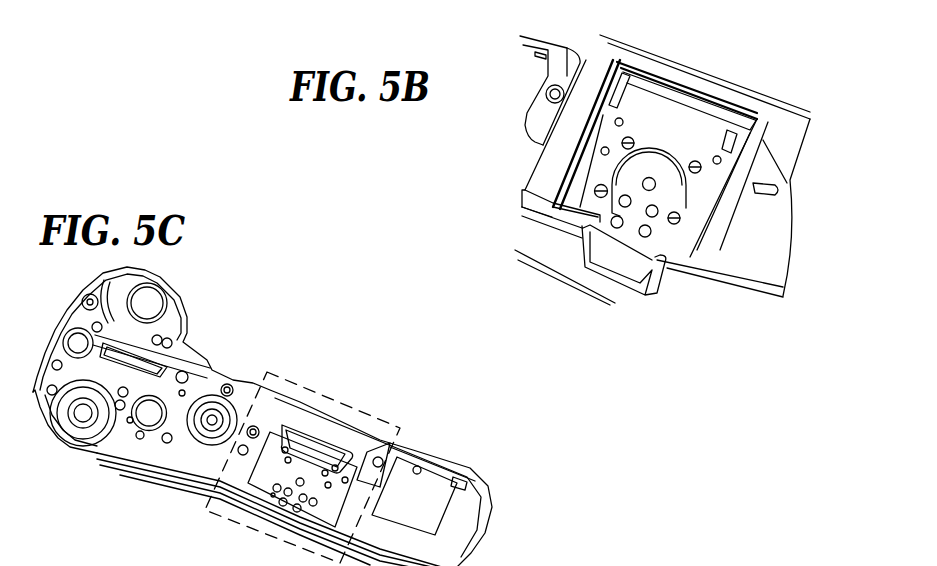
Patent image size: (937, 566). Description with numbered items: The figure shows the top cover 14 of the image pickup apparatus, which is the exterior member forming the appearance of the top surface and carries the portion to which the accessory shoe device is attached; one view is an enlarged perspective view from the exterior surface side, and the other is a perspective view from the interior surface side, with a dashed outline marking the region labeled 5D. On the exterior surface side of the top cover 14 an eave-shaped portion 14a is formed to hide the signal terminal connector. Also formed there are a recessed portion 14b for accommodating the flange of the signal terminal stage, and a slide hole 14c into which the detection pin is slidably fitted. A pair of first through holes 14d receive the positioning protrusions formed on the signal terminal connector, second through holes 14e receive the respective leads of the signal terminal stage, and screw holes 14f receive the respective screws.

In FIG. 5C, the top cover 14 is at (295, 380).
In FIG. 5B, the eave-shaped portion 14a is at (700, 102).
In FIG. 5B, the recessed portion 14b is at (686, 190).
In FIG. 5B, the slide hole 14c is at (601, 151).
In FIG. 5B, the first through holes 14d is at (615, 121).
In FIG. 5B, the second through holes 14e is at (645, 237).
In FIG. 5B, the screw holes 14f is at (601, 185).
In FIG. 5C, the section region indicator 5D is at (368, 405).